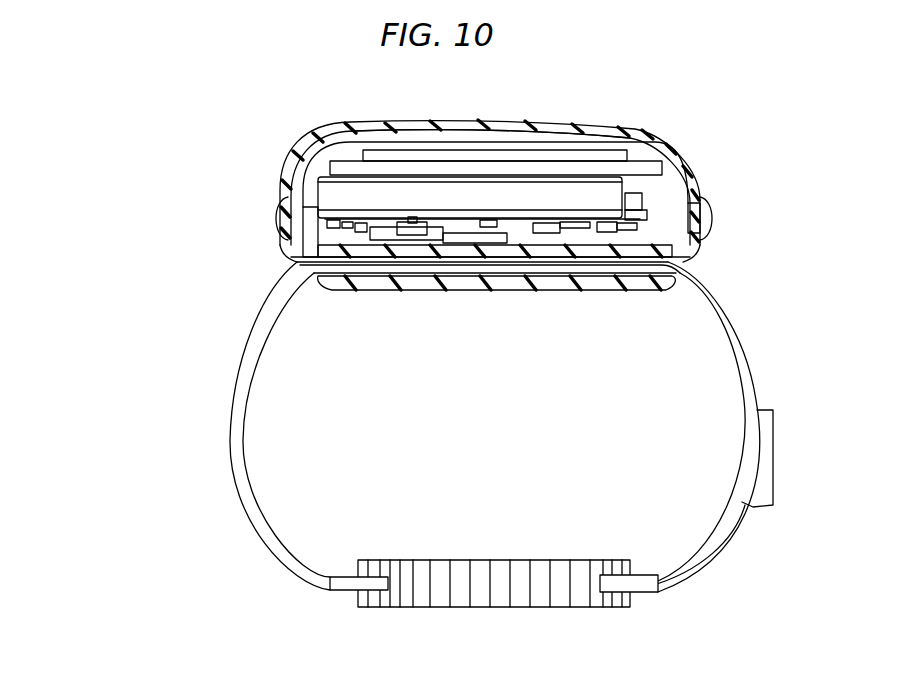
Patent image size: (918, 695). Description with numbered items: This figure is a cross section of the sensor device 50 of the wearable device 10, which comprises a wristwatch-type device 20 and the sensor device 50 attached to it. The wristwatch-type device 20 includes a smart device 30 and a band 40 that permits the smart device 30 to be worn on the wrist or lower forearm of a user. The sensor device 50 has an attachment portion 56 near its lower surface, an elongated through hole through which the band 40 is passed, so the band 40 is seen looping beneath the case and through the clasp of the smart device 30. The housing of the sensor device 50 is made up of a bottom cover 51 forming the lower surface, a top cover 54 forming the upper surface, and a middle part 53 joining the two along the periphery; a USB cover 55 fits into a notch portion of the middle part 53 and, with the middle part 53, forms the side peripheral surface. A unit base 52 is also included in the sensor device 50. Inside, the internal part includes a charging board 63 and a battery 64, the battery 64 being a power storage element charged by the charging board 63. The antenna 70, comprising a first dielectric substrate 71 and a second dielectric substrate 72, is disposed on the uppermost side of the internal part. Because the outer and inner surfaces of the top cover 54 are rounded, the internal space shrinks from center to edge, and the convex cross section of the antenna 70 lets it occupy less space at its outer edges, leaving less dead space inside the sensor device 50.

The wearable device 10 is at (150, 228).
The wristwatch-type device 20 is at (202, 543).
The smart device 30 is at (370, 608).
The band 40 is at (268, 533).
The sensor device 50 is at (707, 141).
The bottom cover 51 is at (408, 284).
The unit base 52 is at (535, 252).
The middle part 53 is at (282, 222).
The top cover 54 is at (573, 132).
The USB cover 55 is at (707, 213).
The attachment portion 56 is at (615, 279).
The charging board 63 is at (607, 222).
The battery 64 is at (332, 191).
The antenna 70 is at (482, 143).
The first dielectric substrate 71 is at (342, 166).
The second dielectric substrate 72 is at (437, 151).